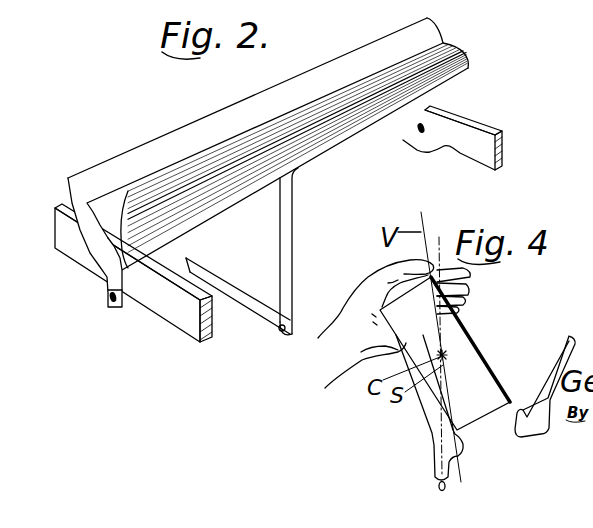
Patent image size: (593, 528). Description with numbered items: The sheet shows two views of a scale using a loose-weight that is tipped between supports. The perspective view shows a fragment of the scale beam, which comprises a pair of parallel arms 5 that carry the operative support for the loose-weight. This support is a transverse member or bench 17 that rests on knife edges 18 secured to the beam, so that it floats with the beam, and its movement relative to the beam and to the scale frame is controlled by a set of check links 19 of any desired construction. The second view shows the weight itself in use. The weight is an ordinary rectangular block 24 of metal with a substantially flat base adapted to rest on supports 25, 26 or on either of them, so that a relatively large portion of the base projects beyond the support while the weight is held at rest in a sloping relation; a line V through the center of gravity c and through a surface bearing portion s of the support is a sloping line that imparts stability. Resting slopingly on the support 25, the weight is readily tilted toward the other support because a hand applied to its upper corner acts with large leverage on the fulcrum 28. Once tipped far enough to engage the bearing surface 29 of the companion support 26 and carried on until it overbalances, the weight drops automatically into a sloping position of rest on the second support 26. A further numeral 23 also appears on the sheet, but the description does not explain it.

In FIG. 2, the parallel arms 5 is at (200, 342).
In FIG. 2, the transverse member or bench 17 is at (105, 270).
In FIG. 2, the knife edges 18 is at (105, 298).
In FIG. 2, the check links 19 is at (279, 247).
In FIG. 4, the rail 23 is at (583, 242).
In FIG. 4, the rectangular block 24 is at (481, 355).
In FIG. 4, the support 25 is at (425, 411).
In FIG. 4, the companion support 26 is at (565, 352).
In FIG. 4, the fulcrum 28 is at (440, 441).
In FIG. 4, the bearing surface 29 is at (553, 373).